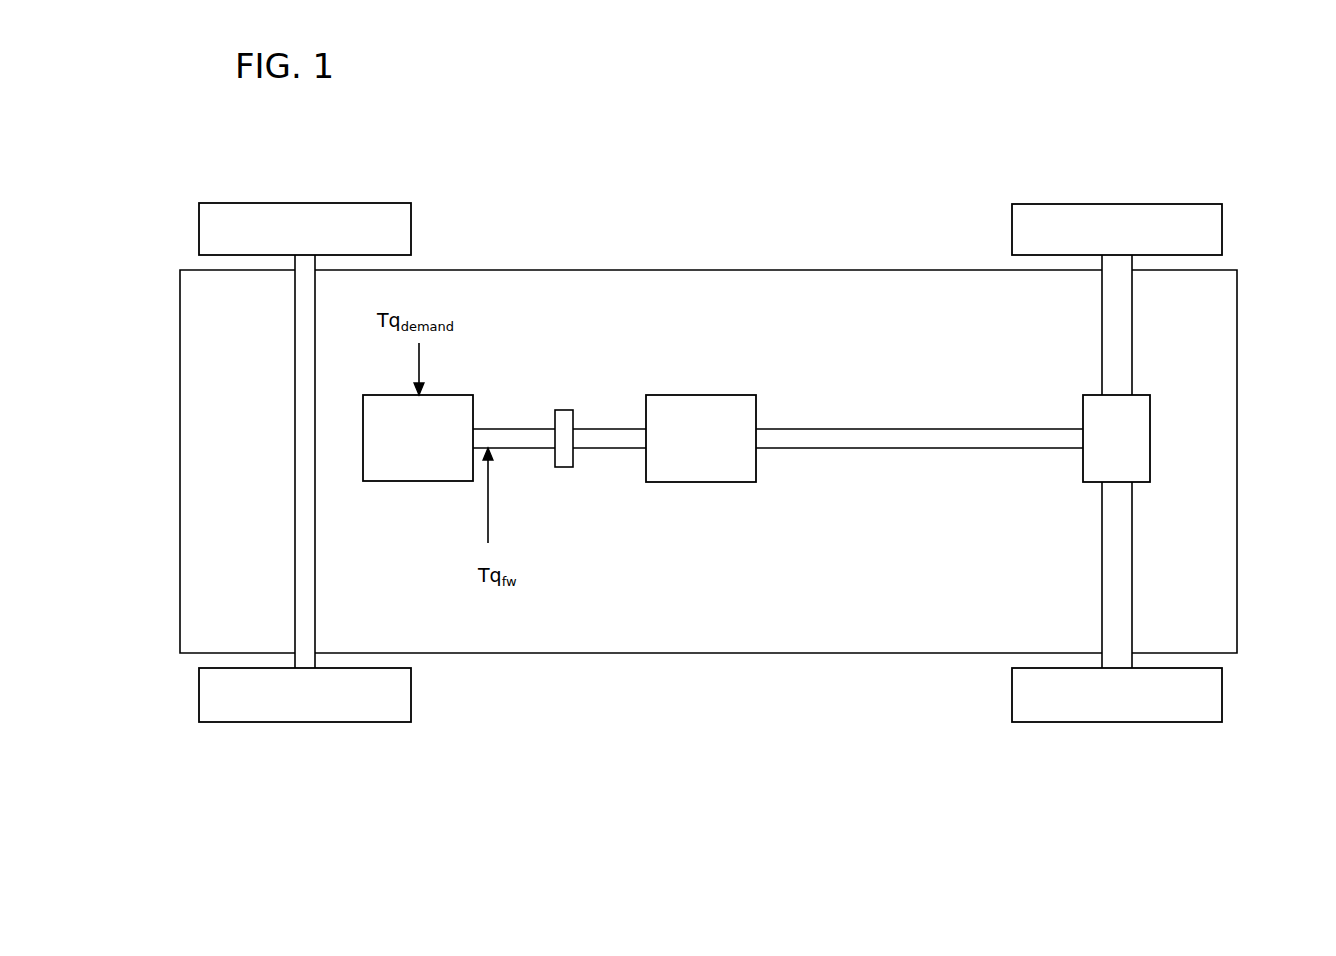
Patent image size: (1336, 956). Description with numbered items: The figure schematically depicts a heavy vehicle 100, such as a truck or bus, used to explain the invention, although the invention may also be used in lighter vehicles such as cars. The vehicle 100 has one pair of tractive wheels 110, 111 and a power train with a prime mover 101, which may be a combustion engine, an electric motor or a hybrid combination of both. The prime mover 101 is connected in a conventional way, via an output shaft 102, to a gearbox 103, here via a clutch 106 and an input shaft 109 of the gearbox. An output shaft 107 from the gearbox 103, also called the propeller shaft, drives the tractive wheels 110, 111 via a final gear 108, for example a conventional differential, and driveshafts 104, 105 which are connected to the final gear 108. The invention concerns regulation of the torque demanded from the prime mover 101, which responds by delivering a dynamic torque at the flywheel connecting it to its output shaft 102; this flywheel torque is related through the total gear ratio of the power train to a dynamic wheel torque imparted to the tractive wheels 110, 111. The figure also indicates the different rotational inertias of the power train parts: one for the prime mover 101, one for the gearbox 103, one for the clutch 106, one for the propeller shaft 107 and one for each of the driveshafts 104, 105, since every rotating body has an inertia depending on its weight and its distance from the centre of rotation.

The heavy vehicle 100 is at (632, 109).
The prime mover 101 is at (392, 470).
The output shaft 102 is at (496, 434).
The gearbox 103 is at (703, 405).
The driveshaft 104 is at (1122, 322).
The driveshaft 105 is at (1127, 582).
The clutch 106 is at (561, 458).
The output shaft 107 is at (1006, 441).
The final gear 108 is at (1146, 437).
The input shaft 109 is at (598, 436).
The tractive wheel 110 is at (1218, 700).
The tractive wheel 111 is at (1218, 222).